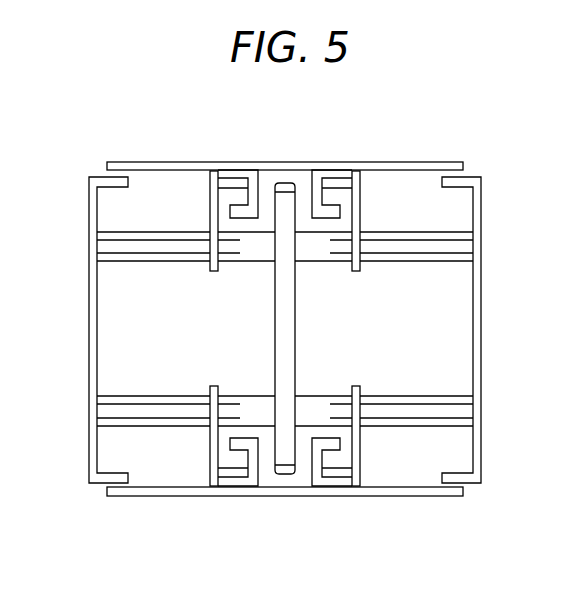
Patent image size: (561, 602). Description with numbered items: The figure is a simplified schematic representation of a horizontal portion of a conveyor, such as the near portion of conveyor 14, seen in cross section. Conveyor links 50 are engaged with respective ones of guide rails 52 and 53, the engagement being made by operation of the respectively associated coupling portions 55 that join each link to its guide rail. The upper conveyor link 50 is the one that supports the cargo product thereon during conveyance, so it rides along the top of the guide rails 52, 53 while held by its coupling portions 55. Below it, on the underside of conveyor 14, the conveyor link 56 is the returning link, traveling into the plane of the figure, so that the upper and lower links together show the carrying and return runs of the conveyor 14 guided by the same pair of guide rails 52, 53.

The conveyor 14 is at (58, 105).
The conveyor link 50 is at (440, 162).
The guide rail 52 is at (210, 183).
The guide rail 53 is at (362, 172).
The coupling portion 55 is at (276, 186).
The conveyor link 56 is at (427, 497).